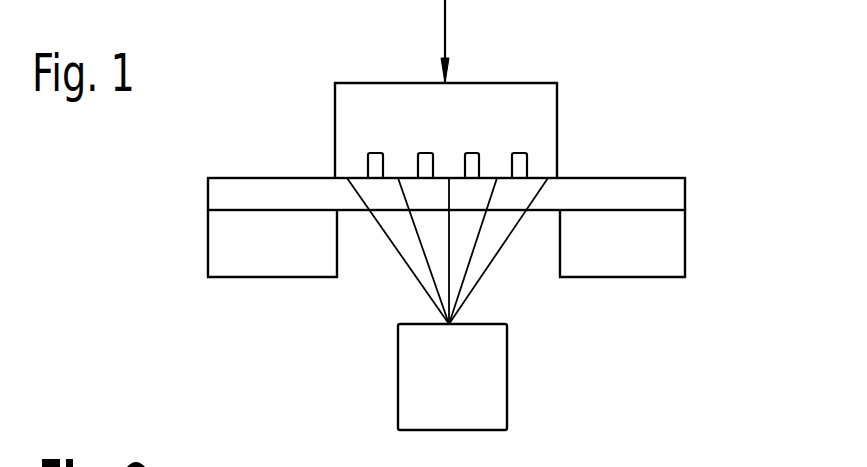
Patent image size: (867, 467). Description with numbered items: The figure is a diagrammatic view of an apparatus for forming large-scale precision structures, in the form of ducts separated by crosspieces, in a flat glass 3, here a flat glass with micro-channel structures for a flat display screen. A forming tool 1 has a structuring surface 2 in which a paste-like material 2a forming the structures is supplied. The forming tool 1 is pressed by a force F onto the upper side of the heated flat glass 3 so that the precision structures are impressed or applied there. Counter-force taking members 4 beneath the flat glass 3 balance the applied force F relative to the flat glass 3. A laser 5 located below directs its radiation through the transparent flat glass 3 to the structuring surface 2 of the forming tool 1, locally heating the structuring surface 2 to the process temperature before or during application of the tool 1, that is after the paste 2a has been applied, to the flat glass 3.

The force F is at (445, 30).
The forming tool 1 is at (560, 104).
The structuring surface 2 is at (448, 153).
The paste-like material 2a is at (372, 162).
The flat glass 3 is at (670, 196).
The counter-force taking members 4 is at (228, 263).
The laser 5 is at (487, 391).